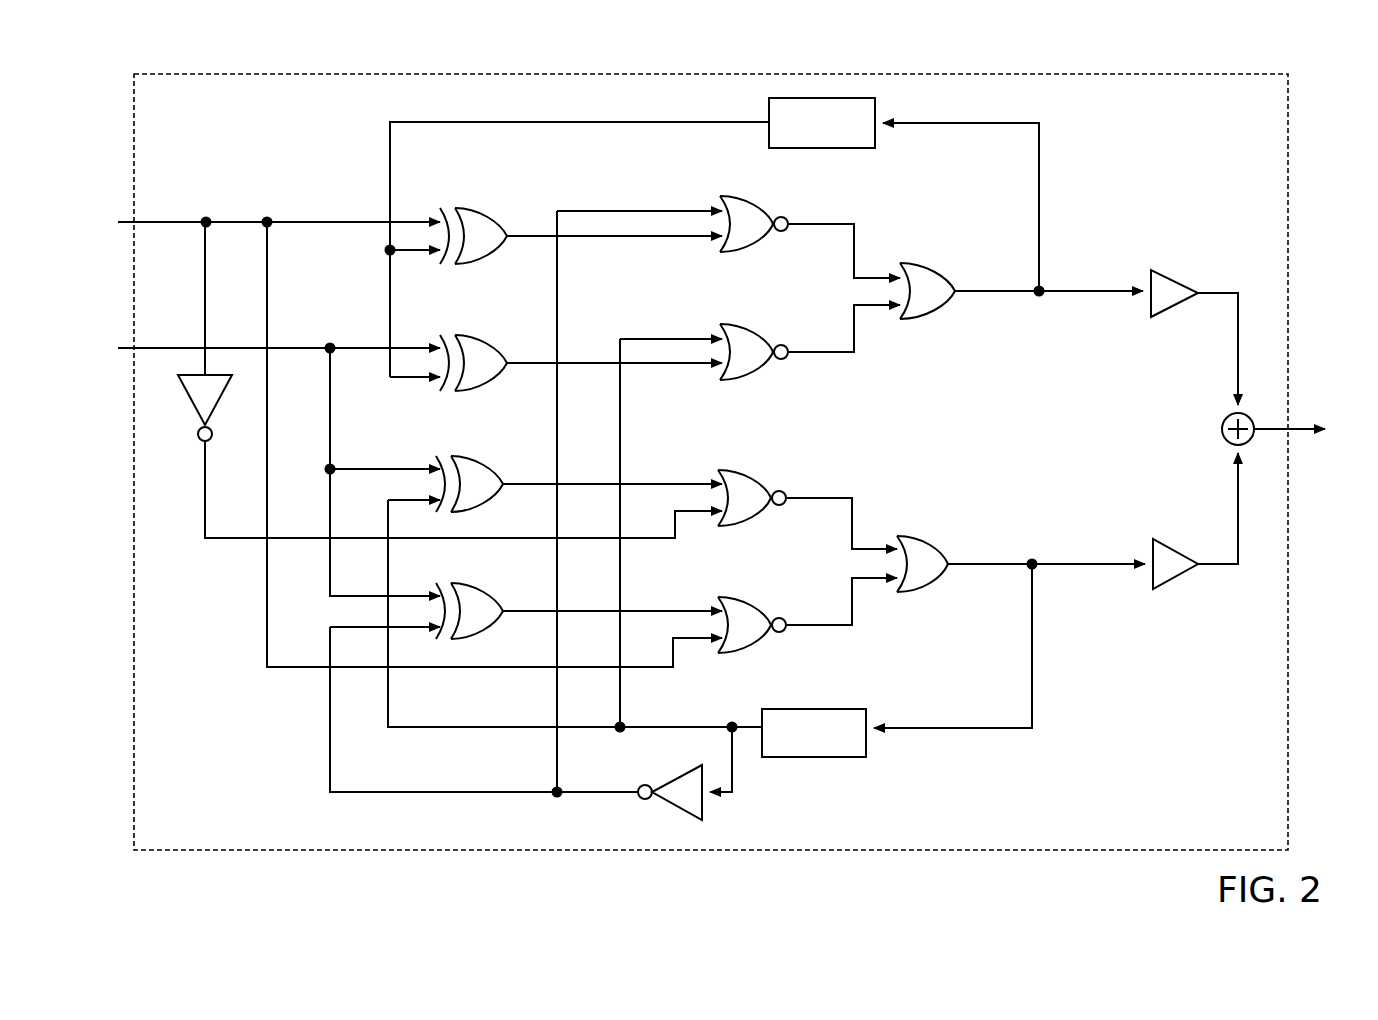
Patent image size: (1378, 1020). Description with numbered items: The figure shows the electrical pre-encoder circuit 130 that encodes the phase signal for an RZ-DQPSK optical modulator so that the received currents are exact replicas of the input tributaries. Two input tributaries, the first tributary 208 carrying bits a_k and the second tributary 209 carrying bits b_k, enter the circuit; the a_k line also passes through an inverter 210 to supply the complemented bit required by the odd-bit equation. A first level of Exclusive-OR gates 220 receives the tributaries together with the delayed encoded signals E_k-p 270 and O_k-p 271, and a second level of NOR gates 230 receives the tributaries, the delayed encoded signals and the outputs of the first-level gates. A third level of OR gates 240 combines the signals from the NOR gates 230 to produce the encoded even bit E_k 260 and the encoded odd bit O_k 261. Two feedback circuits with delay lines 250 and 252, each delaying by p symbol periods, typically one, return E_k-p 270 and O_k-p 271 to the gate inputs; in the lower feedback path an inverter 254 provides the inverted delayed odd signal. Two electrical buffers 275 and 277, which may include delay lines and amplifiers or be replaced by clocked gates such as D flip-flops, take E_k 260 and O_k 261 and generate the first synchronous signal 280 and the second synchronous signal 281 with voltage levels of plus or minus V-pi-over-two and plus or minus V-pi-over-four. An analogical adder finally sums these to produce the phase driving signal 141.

The electrical pre-encoder circuit 130 is at (330, 43).
The phase driving signal 141 is at (1345, 385).
The first tributary NRZ1 208 is at (82, 200).
The second tributary NRZ2 209 is at (82, 330).
The inverter 210 is at (197, 420).
The Exclusive-OR gates 220 is at (505, 264).
The NOR gates 230 is at (772, 253).
The OR gates 240 is at (930, 353).
The delay line 250 is at (862, 150).
The delay line 252 is at (848, 758).
The inverter on delayed O_k 254 is at (672, 804).
The encoded signal E_k 260 is at (1088, 352).
The encoded signal O_k 261 is at (1088, 617).
The delayed encoded signal E_k-p 270 is at (660, 149).
The delayed encoded signal O_k-p 271 is at (712, 697).
The electrical buffer 275 is at (1170, 268).
The electrical buffer 277 is at (1170, 538).
The synchronous signal V-phi-1 280 is at (1230, 240).
The synchronous signal V-phi-2 281 is at (1232, 625).